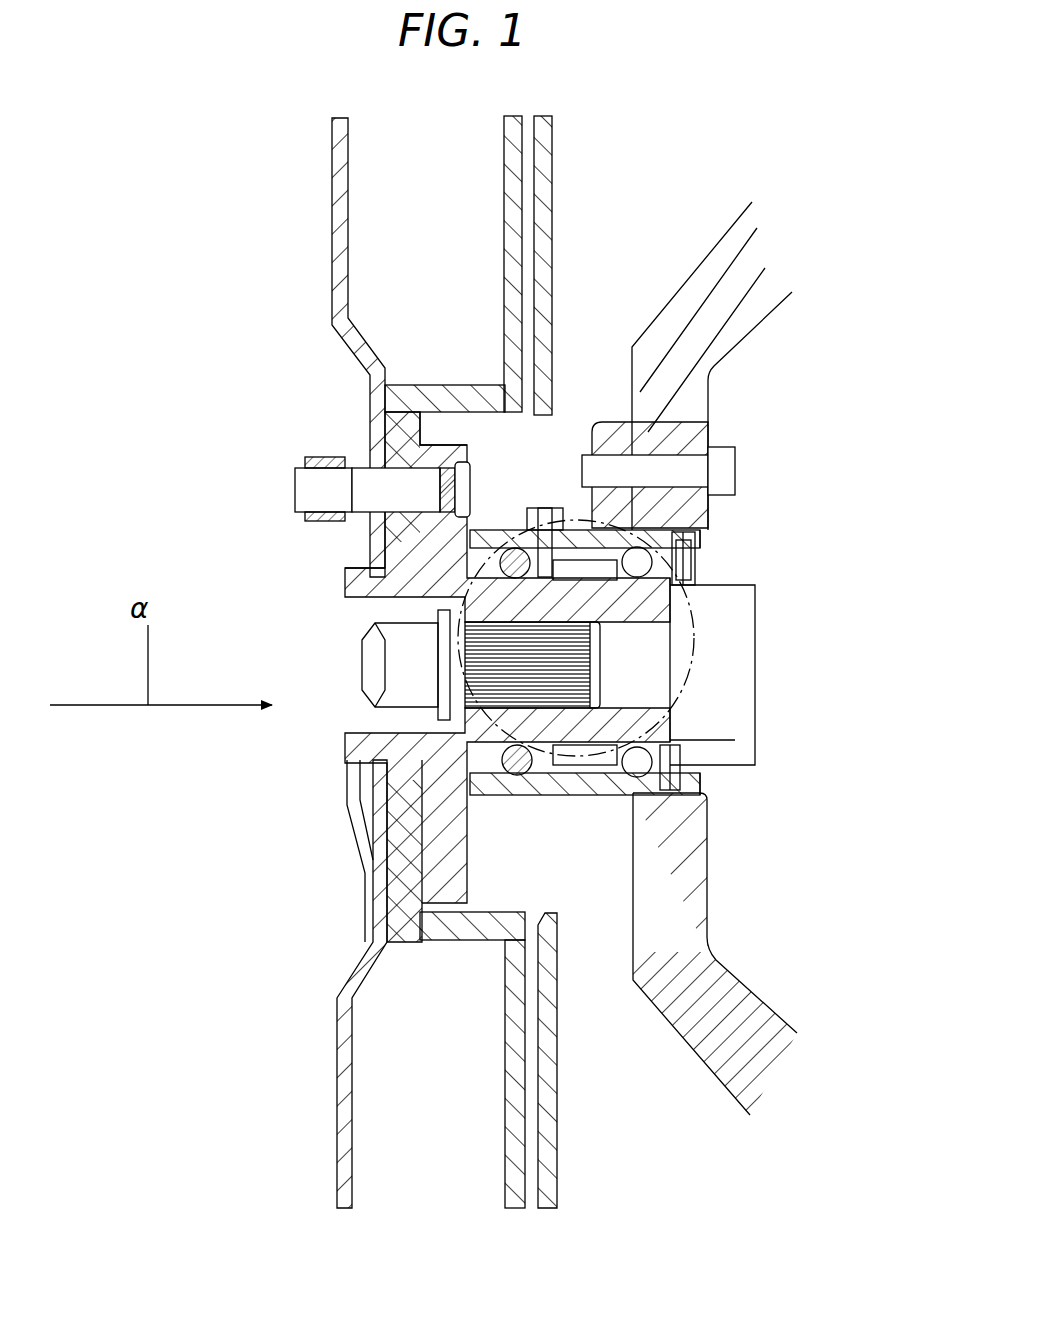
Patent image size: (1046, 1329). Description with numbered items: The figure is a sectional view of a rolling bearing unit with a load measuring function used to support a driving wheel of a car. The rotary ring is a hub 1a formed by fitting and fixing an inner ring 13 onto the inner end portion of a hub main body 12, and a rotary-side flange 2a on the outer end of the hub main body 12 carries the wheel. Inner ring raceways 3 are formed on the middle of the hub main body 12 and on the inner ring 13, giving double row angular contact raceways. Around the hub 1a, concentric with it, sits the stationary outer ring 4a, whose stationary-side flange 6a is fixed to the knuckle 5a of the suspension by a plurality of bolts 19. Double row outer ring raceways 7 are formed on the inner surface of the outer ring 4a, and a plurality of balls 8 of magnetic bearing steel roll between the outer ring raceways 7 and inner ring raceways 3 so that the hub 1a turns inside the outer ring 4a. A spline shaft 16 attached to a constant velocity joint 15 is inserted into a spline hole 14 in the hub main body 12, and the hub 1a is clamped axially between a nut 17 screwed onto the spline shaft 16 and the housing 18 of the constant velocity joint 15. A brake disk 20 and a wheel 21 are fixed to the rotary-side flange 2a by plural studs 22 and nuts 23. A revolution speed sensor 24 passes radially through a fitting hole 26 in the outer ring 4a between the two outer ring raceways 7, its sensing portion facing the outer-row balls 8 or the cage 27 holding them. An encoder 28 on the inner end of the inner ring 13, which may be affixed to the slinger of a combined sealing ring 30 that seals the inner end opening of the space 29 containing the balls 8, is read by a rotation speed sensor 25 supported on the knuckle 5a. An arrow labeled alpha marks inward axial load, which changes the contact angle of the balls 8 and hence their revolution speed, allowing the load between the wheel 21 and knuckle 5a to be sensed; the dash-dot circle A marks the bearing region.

The hub 1a is at (408, 546).
The rotary-side flange 2a is at (435, 440).
The inner ring raceway 3 is at (415, 770).
The outer ring 4a is at (567, 800).
The knuckle 5a is at (745, 325).
The stationary-side flange 6a is at (608, 437).
The outer ring raceway 7 is at (512, 790).
The ball 8 is at (500, 578).
The hub main body 12 is at (412, 585).
The inner ring 13 is at (735, 740).
The spline hole 14 is at (462, 712).
The constant velocity joint 15 is at (792, 612).
The spline shaft 16 is at (445, 628).
The nut 17 is at (385, 661).
The housing 18 is at (740, 640).
The bolt 19 is at (730, 470).
The brake disk 20 is at (552, 130).
The wheel 21 is at (332, 148).
The stud 22 is at (305, 490).
The nut 23 is at (320, 458).
The revolution speed sensor 24 is at (545, 505).
The rotation speed sensor 25 is at (692, 578).
The fitting hole 26 is at (556, 520).
The cage 27 is at (505, 585).
The encoder 28 is at (700, 555).
The space 29 is at (550, 768).
The combined sealing ring 30 is at (690, 790).
The region A is at (700, 620).